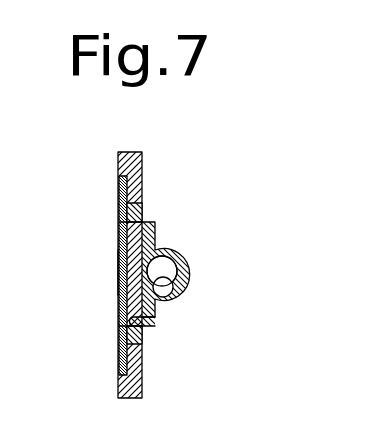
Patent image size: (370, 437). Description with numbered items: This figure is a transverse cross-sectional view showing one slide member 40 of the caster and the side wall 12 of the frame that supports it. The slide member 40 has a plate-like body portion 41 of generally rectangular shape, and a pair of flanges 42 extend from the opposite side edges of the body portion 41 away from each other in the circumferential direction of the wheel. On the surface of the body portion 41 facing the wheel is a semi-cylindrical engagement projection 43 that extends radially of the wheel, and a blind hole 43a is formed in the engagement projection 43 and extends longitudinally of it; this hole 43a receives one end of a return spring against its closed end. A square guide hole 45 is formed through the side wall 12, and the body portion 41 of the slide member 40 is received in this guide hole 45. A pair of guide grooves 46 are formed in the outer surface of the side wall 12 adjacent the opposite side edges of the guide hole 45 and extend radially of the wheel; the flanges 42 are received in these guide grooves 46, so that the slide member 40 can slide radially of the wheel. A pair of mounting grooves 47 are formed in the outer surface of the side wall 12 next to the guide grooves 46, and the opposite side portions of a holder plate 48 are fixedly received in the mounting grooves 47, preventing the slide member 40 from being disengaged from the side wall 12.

The side wall 12 is at (142, 163).
The slide member 40 is at (162, 283).
The body portion 41 is at (157, 223).
The flanges 42 is at (143, 200).
The engagement projection 43 is at (190, 265).
The blind hole 43a is at (183, 290).
The guide hole 45 is at (158, 325).
The guide grooves 46 is at (125, 222).
The mounting grooves 47 is at (118, 190).
The holder plate 48 is at (118, 270).